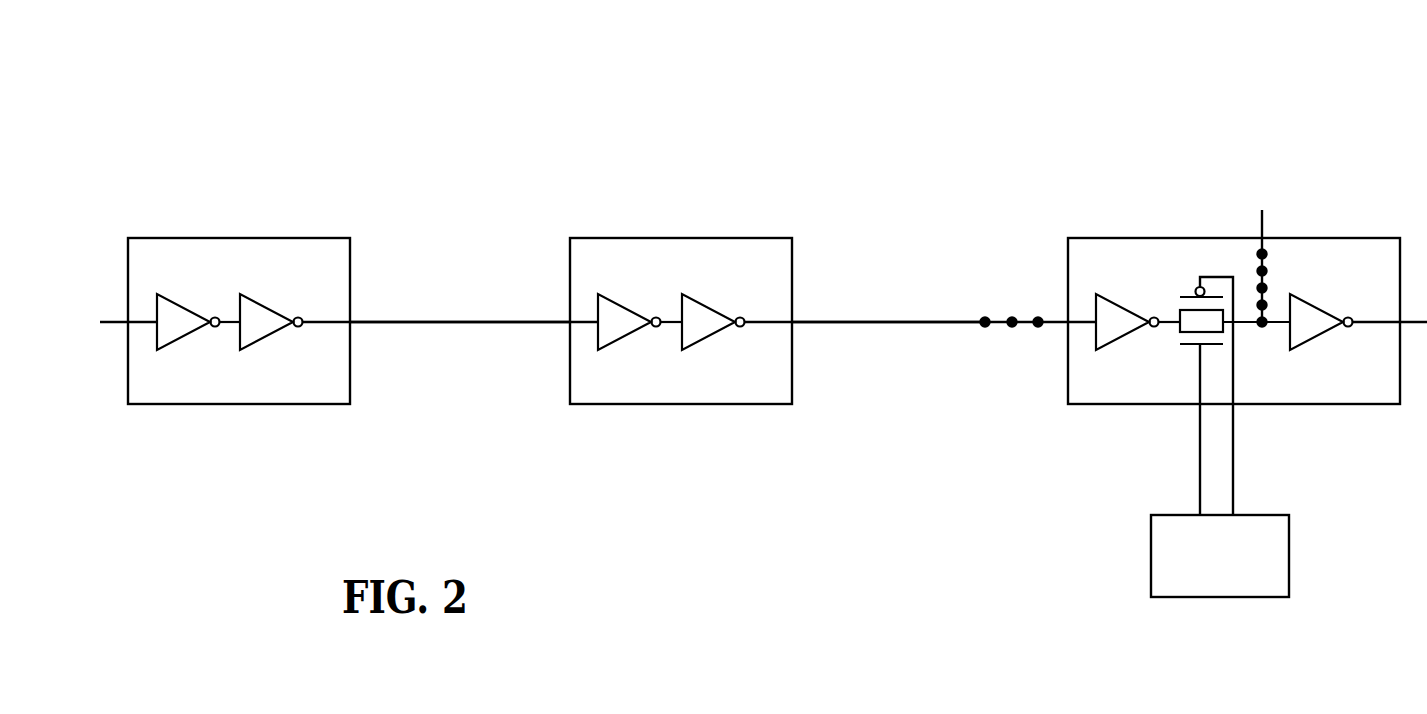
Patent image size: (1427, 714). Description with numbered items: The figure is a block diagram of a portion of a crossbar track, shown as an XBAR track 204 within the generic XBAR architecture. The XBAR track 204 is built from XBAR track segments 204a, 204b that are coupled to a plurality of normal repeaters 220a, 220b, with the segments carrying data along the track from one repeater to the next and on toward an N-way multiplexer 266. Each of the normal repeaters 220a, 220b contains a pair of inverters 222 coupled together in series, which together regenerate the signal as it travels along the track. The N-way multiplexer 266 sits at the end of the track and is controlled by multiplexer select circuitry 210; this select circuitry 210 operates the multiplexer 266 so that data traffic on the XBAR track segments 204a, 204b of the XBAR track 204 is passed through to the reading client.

The XBAR track 204 is at (1298, 80).
The XBAR track segment 204a is at (488, 319).
The XBAR track segment 204b is at (930, 319).
The normal repeater 220a is at (329, 237).
The normal repeater 220b is at (771, 237).
The inverter 222 is at (190, 310).
The N-way multiplexer 266 is at (1378, 237).
The multiplexer select circuitry 210 is at (1151, 537).